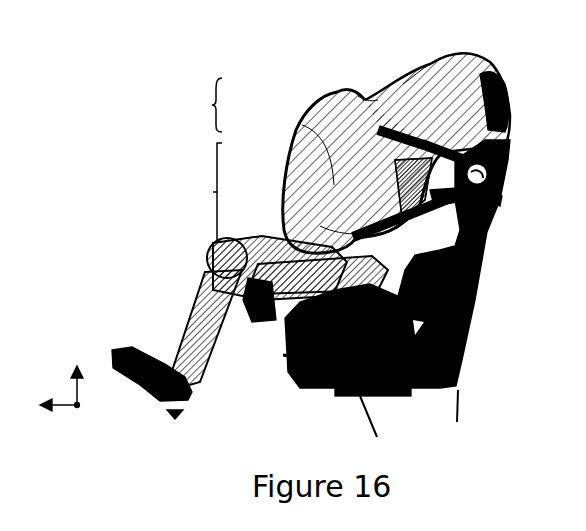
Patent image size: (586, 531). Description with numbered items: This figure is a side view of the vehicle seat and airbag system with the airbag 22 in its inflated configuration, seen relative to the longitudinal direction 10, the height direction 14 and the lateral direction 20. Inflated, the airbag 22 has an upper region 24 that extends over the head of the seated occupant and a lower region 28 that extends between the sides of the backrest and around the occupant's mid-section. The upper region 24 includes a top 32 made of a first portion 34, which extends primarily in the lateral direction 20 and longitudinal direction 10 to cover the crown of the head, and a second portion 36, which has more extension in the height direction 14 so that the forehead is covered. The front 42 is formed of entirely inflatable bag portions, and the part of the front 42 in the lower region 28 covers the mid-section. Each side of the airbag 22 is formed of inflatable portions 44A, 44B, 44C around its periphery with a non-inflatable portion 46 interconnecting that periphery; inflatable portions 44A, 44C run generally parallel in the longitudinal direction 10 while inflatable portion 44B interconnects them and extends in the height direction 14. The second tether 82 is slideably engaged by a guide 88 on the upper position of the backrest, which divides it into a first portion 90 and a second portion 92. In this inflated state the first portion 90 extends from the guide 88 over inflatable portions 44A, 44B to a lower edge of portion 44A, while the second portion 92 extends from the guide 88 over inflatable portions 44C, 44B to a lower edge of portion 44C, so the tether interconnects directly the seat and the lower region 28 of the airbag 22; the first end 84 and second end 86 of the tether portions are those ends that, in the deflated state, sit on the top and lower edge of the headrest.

The longitudinal direction 10 is at (51, 412).
The height direction 14 is at (79, 377).
The lateral direction 20 is at (87, 415).
The airbag 22 is at (461, 38).
The upper region 24 is at (202, 105).
The lower region 28 is at (202, 192).
The top 32 is at (378, 64).
The first portion 34 is at (403, 84).
The second portion 36 is at (365, 99).
The front 42 is at (288, 193).
The inflatable portion 44A is at (389, 226).
The inflatable portion 44B is at (446, 187).
The inflatable portion 44C is at (437, 102).
The non-inflatable portion 46 is at (405, 188).
The second tether 82 is at (505, 156).
The first end 84 is at (354, 236).
The second end 86 is at (380, 130).
The guide 88 is at (496, 201).
The first portion 90 is at (434, 212).
The second portion 92 is at (452, 150).